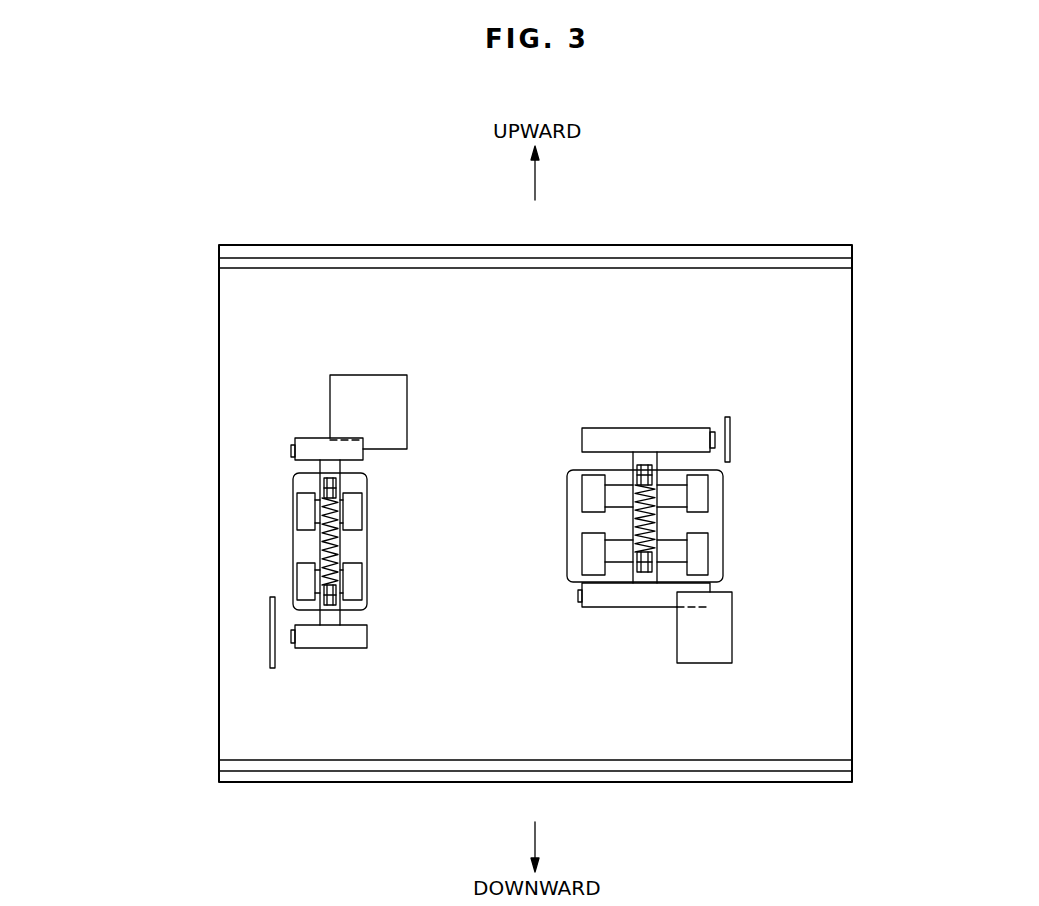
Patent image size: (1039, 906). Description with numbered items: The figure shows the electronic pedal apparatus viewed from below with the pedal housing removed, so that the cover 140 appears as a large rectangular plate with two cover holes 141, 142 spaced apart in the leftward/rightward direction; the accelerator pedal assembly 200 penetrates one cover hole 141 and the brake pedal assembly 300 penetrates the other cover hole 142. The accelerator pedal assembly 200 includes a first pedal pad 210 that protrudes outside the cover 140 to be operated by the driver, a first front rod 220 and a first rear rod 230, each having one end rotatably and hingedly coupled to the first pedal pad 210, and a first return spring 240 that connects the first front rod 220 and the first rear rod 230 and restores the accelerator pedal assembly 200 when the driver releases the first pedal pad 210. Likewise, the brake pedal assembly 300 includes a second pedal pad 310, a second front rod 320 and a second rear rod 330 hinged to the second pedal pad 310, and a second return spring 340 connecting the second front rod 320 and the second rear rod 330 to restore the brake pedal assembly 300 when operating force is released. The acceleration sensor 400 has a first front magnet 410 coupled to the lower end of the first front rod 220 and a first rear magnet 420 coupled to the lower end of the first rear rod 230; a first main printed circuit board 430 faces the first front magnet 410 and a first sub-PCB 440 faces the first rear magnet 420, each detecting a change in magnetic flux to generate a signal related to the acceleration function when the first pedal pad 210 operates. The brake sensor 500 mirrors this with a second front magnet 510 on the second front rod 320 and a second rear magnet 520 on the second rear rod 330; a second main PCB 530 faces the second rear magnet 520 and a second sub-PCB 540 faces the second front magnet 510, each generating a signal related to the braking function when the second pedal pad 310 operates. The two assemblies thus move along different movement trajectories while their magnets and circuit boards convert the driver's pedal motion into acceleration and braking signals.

The cover 140 is at (270, 340).
The cover hole 141 is at (295, 482).
The cover hole 142 is at (725, 500).
The accelerator pedal assembly 200 is at (258, 509).
The first pedal pad 210 is at (362, 547).
The first front rod 220 is at (310, 450).
The first rear rod 230 is at (330, 637).
The first return spring 240 is at (234, 541).
The brake pedal assembly 300 is at (728, 520).
The second pedal pad 310 is at (572, 520).
The second front rod 320 is at (678, 440).
The second rear rod 330 is at (640, 595).
The second return spring 340 is at (650, 520).
The acceleration sensor 400 is at (447, 155).
The first front magnet 410 is at (365, 447).
The first rear magnet 420 is at (291, 640).
The first main printed circuit board 430 is at (370, 393).
The first sub-PCB 440 is at (272, 621).
The brake sensor 500 is at (958, 386).
The second front magnet 510 is at (730, 428).
The second rear magnet 520 is at (712, 600).
The second main PCB 530 is at (718, 650).
The second sub-PCB 540 is at (730, 447).